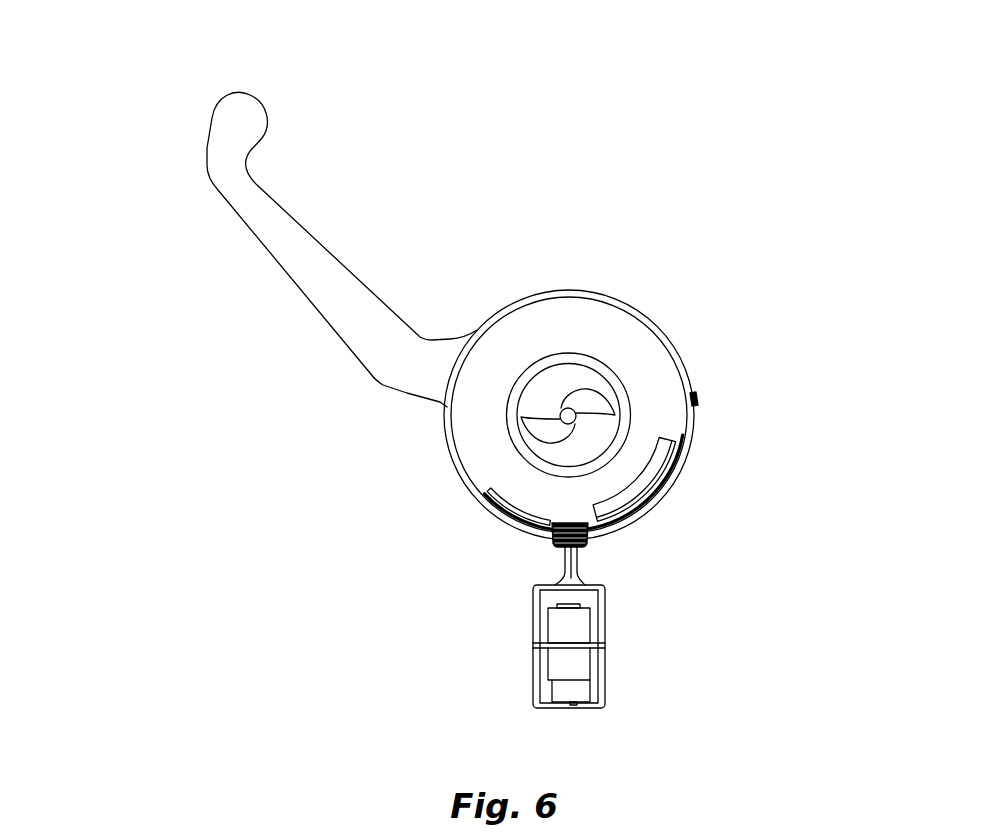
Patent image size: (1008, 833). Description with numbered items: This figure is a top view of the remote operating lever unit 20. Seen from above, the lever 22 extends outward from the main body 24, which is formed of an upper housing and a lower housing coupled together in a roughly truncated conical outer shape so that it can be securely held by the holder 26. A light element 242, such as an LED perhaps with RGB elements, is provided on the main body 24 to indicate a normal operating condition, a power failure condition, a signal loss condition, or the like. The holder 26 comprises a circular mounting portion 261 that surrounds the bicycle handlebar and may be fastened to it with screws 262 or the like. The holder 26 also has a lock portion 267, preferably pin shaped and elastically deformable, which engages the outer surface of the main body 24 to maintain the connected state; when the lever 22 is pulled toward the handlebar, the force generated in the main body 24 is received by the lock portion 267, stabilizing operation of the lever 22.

The remote operating lever unit 20 is at (573, 227).
The lever 22 is at (327, 247).
The main body 24 is at (633, 342).
The light element 242 is at (632, 492).
The lock portion 267 is at (550, 543).
The holder 26 is at (533, 630).
The mounting portion 261 is at (605, 632).
The screws 262 is at (557, 683).